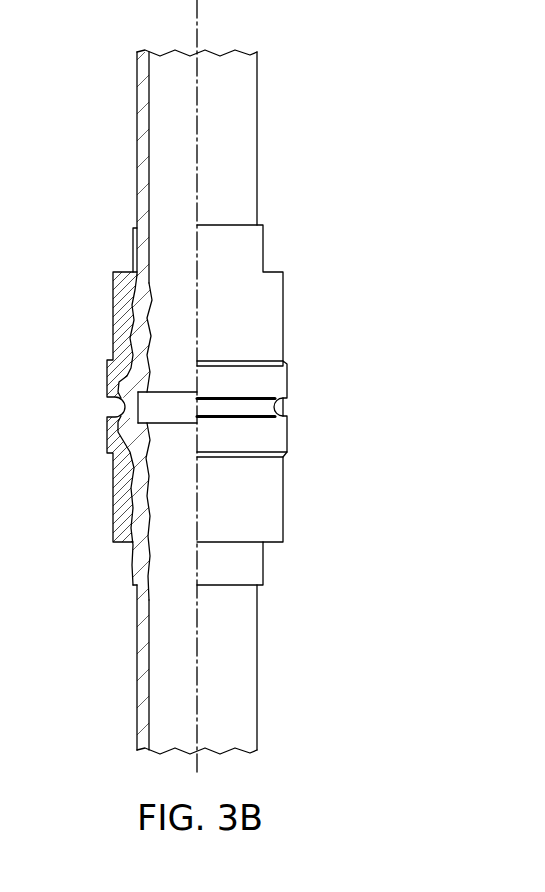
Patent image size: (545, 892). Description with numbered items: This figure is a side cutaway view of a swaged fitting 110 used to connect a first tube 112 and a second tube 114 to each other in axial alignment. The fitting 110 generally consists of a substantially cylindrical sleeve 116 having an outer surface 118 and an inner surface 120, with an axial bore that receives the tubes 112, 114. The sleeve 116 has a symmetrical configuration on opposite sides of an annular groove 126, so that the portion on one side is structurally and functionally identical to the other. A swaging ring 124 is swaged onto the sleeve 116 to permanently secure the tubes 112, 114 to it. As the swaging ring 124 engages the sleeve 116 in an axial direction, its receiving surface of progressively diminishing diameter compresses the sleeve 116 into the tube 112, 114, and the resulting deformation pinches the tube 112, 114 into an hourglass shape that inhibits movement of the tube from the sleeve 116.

The fitting 110 is at (353, 387).
The first tube 112 is at (258, 684).
The second tube 114 is at (258, 134).
The sleeve 116 is at (133, 236).
The outer surface 118 is at (80, 248).
The inner surface 120 is at (196, 250).
The swaging ring 124 is at (284, 320).
The annular groove 126 is at (108, 407).